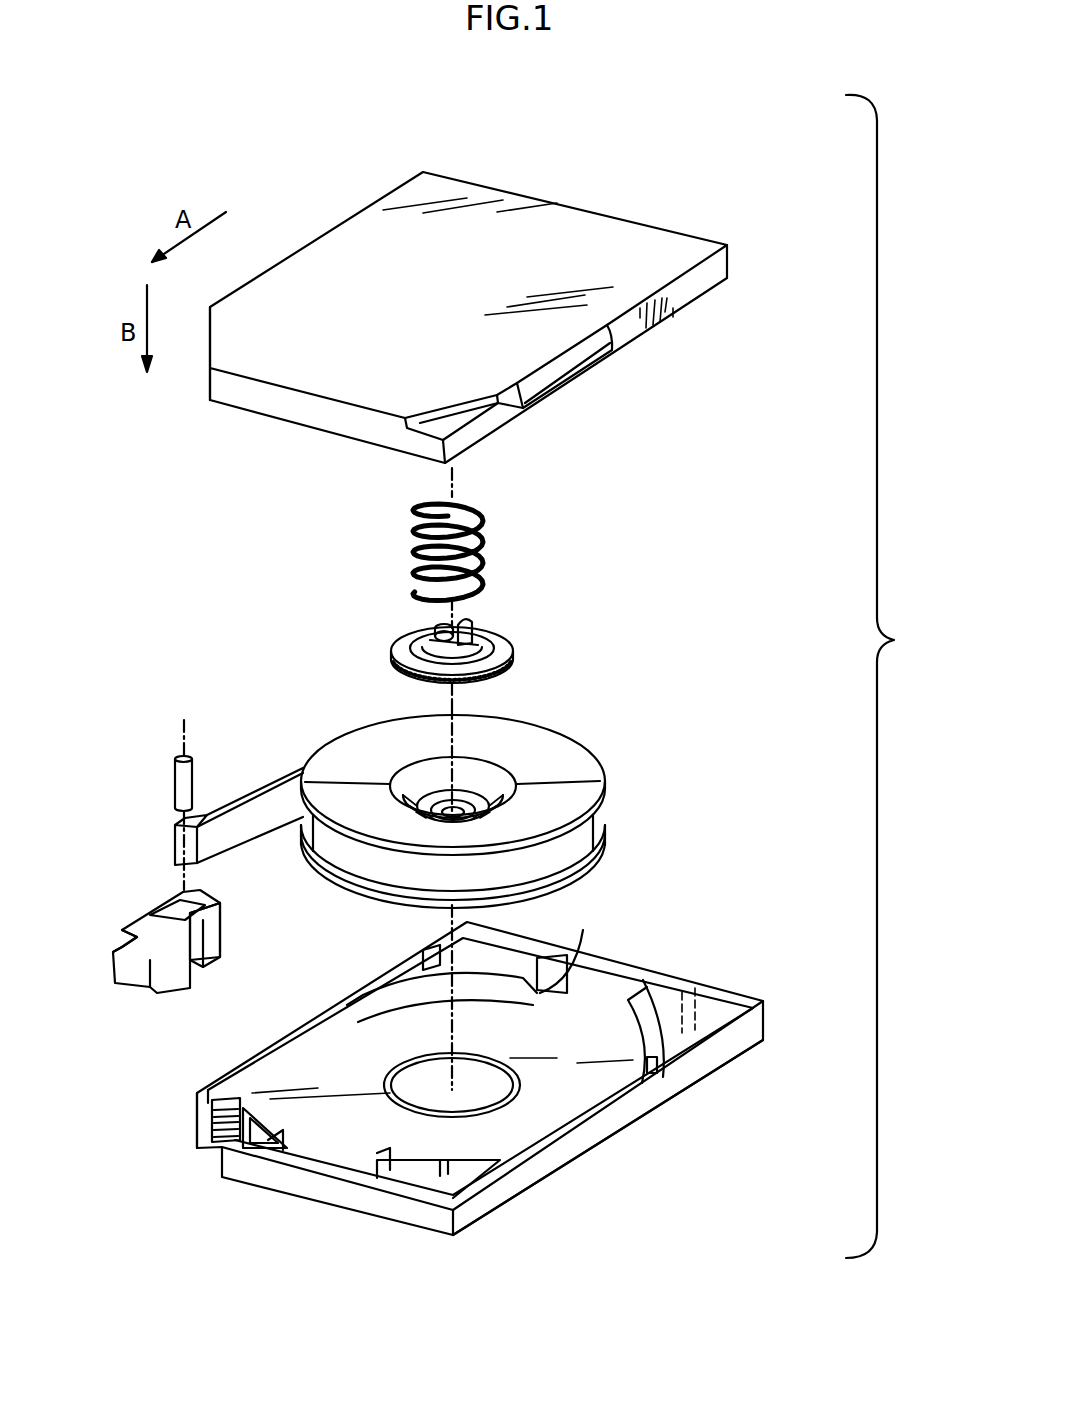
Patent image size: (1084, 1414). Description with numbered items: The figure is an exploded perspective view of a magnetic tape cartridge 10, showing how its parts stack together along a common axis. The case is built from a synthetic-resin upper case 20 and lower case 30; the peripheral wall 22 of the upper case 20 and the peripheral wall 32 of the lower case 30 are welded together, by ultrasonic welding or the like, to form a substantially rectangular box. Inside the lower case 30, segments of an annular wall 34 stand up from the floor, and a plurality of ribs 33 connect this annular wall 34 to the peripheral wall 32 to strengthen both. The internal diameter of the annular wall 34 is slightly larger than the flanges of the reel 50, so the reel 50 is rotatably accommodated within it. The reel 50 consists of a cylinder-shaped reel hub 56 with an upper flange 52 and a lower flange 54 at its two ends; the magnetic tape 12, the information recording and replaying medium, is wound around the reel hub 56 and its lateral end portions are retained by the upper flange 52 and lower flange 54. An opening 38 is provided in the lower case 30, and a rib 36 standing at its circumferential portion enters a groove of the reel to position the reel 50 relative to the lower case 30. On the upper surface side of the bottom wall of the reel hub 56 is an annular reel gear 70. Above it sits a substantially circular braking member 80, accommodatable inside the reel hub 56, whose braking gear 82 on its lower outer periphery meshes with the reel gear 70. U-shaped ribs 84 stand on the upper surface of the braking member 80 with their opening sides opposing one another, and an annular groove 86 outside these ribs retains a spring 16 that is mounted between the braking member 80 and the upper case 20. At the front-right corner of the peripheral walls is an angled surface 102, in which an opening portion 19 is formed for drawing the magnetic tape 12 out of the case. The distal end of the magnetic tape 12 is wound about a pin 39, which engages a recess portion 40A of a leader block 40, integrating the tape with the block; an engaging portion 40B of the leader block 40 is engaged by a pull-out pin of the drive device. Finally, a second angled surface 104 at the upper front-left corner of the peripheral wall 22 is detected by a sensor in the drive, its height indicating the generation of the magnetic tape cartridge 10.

The magnetic tape cartridge 10 is at (712, 170).
The magnetic tape 12 is at (272, 792).
The spring 16 is at (482, 512).
The opening portion 19 is at (207, 1135).
The upper case 20 is at (735, 263).
The peripheral wall 22 is at (683, 338).
The lower case 30 is at (759, 1043).
The peripheral wall 32 is at (615, 1112).
The ribs 33 is at (548, 995).
The annular wall 34 is at (612, 1010).
The rib 36 is at (392, 1078).
The opening 38 is at (480, 1078).
The pin 39 is at (180, 778).
The leader block 40 is at (178, 972).
The recess portion 40A is at (205, 936).
The engaging portion 40B is at (118, 942).
The reel 50 is at (610, 831).
The upper flange 52 is at (603, 775).
The lower flange 54 is at (593, 872).
The reel hub 56 is at (478, 765).
The reel gear 70 is at (498, 787).
The braking member 80 is at (512, 652).
The braking gear 82 is at (410, 676).
The U-shaped ribs 84 is at (440, 630).
The annular groove 86 is at (490, 645).
The angled surface 102 is at (210, 362).
The angled surface 104 is at (420, 437).